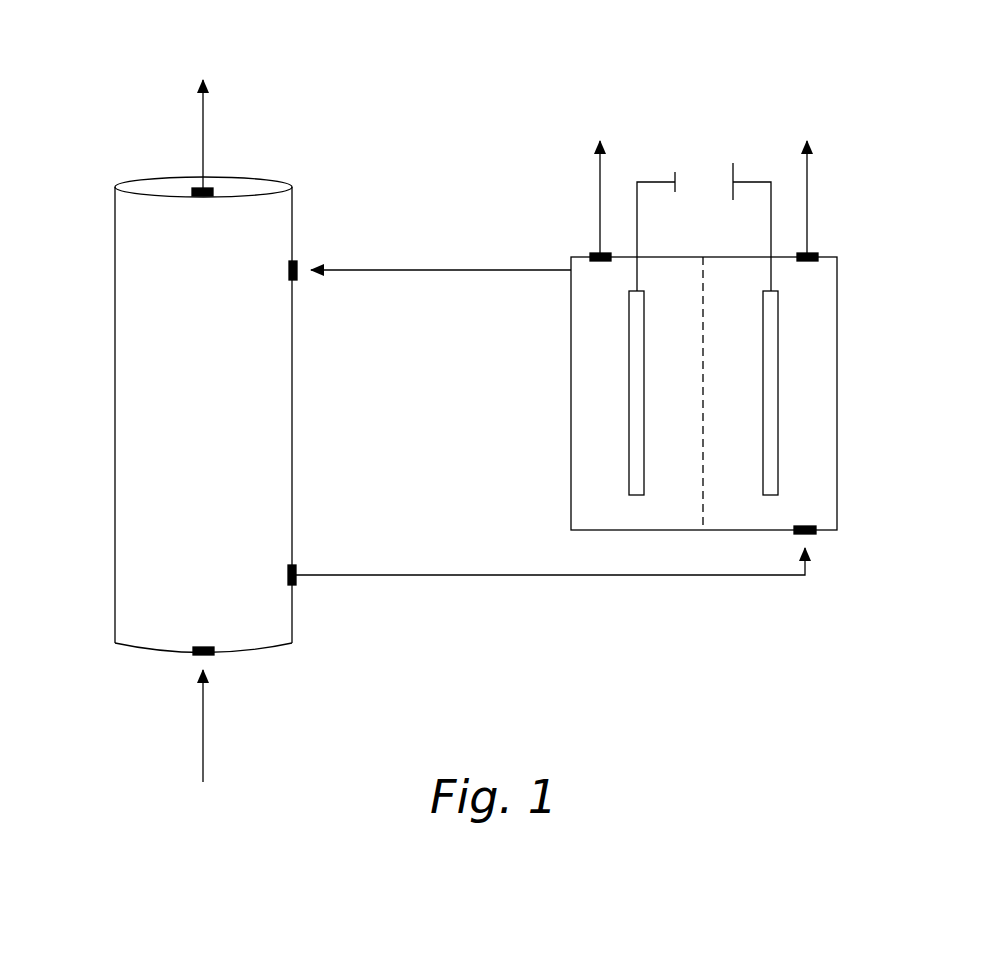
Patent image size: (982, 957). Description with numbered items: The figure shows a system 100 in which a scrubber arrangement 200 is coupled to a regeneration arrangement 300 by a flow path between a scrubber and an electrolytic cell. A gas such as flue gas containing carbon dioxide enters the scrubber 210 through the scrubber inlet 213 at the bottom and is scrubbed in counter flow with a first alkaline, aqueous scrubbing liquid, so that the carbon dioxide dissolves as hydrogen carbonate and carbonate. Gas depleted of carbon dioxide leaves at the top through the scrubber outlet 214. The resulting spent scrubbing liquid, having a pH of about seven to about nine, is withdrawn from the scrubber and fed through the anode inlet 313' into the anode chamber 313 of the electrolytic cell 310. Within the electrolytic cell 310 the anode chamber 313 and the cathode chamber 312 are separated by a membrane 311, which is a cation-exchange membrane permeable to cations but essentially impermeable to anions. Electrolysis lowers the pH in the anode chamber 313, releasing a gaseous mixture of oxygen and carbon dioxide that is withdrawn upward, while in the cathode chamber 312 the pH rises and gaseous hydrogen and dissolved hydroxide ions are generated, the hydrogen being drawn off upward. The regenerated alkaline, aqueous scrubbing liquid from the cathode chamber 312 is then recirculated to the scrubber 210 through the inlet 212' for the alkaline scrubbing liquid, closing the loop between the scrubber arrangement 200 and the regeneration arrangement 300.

The system 100 is at (551, 683).
The scrubber arrangement 200 is at (279, 118).
The scrubber 210 is at (128, 288).
The inlet for the alkaline, aqueous scrubbing liquid 212' is at (430, 249).
The scrubber inlet 213 is at (193, 656).
The scrubber outlet 214 is at (193, 188).
The regeneration arrangement 300 is at (716, 84).
The electrolytic cell 310 is at (837, 333).
The membrane 311 is at (700, 513).
The cathode chamber 312 is at (585, 430).
The anode chamber 313 is at (817, 318).
The anode inlet 313' is at (852, 558).